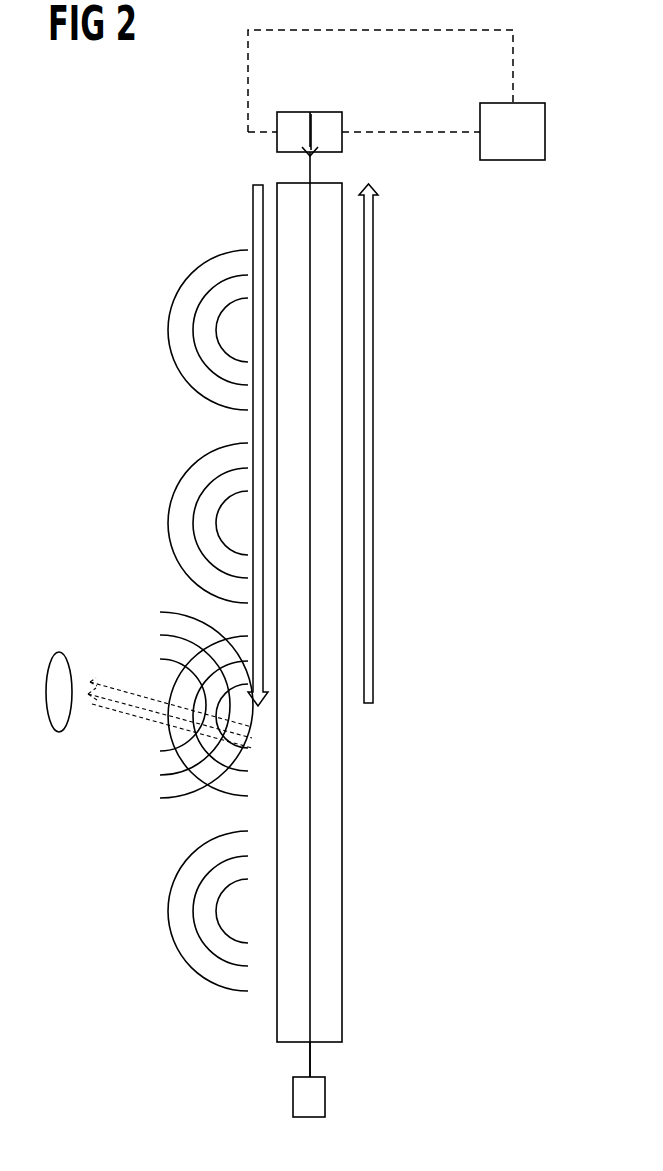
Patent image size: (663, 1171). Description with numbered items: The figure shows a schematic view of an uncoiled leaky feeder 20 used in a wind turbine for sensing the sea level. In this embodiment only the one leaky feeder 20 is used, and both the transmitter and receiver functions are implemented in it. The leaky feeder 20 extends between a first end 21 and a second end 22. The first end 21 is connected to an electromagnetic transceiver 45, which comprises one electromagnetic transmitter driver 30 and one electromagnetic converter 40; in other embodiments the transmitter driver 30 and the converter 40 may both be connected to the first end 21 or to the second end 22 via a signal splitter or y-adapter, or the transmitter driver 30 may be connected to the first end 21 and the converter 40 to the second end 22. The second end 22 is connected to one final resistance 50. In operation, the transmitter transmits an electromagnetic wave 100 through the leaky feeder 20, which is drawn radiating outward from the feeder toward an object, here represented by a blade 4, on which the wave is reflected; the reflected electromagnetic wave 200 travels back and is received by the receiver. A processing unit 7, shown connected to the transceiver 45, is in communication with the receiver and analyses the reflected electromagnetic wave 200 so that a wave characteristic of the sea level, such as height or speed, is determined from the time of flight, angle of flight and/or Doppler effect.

The rotational blade 4 is at (62, 651).
The processing unit 7 is at (513, 160).
The leaky feeder 20 is at (341, 207).
The first end 21 is at (308, 172).
The second end 22 is at (311, 1067).
The electromagnetic transmitter driver 30 is at (292, 119).
The electromagnetic converter 40 is at (330, 119).
The electromagnetic transceiver 45 is at (343, 127).
The final resistance 50 is at (326, 1095).
The electromagnetic wave 100 is at (213, 258).
The reflected electromagnetic wave 200 is at (163, 612).